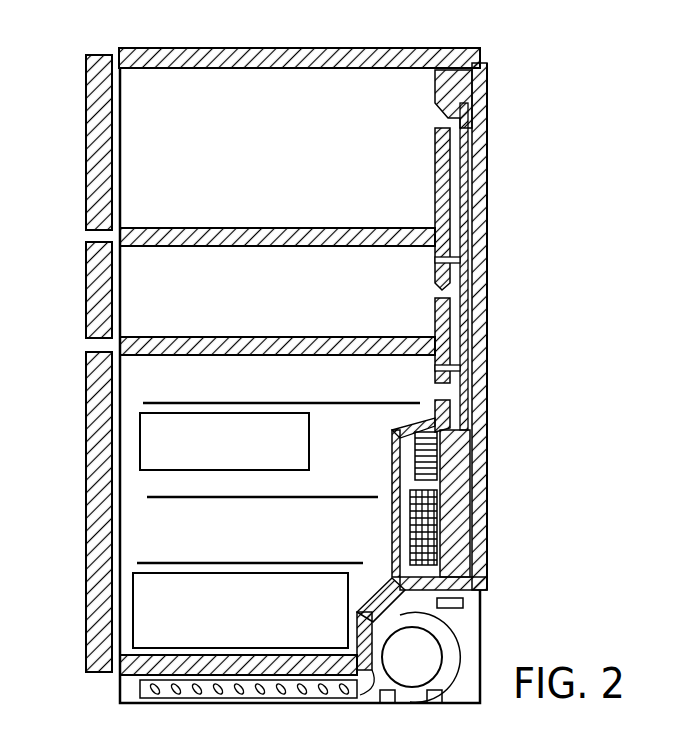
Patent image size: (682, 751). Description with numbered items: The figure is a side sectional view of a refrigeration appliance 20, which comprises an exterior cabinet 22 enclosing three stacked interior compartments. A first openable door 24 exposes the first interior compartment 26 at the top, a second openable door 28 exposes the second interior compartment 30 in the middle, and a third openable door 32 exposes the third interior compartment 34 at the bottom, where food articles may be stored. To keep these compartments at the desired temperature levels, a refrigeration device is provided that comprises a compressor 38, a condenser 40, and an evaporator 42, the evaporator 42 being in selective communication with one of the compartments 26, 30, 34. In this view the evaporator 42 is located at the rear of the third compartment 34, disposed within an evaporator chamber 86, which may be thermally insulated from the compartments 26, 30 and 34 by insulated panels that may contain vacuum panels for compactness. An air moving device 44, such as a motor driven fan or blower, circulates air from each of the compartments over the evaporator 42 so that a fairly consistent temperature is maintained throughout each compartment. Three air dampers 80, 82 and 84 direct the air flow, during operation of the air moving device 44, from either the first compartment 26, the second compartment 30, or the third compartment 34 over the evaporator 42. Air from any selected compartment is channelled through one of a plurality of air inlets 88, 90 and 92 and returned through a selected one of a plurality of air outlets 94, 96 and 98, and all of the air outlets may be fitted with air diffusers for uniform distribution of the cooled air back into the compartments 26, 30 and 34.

The refrigeration appliance 20 is at (502, 54).
The exterior cabinet 22 is at (342, 48).
The first openable door 24 is at (86, 130).
The first interior compartment 26 is at (277, 148).
The second openable door 28 is at (86, 282).
The second interior compartment 30 is at (277, 291).
The third openable door 32 is at (86, 452).
The third interior compartment 34 is at (270, 505).
The compressor 38 is at (427, 634).
The condenser 40 is at (140, 688).
The evaporator 42 is at (412, 522).
The air moving device 44 is at (415, 440).
The air damper 80 is at (470, 130).
The air damper 82 is at (470, 282).
The air damper 84 is at (470, 390).
The evaporator chamber 86 is at (403, 463).
The air inlet 88 is at (435, 78).
The air inlet 90 is at (435, 260).
The air inlet 92 is at (435, 366).
The air outlet 94 is at (433, 122).
The air outlet 96 is at (432, 292).
The air outlet 98 is at (435, 388).